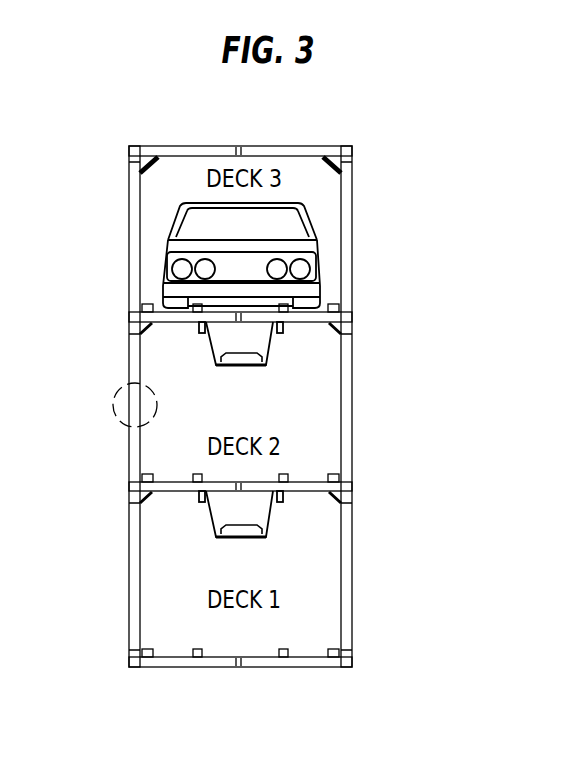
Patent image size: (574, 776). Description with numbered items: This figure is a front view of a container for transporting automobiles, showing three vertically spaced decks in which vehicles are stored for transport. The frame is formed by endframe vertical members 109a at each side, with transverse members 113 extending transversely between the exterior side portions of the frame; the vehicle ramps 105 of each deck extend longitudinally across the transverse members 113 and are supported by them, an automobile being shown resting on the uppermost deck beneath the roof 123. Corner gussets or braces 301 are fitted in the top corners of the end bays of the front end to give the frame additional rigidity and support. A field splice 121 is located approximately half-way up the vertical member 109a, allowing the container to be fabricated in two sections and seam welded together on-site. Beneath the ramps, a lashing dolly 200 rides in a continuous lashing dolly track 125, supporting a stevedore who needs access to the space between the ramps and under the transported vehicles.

The corner gusset 301 is at (147, 154).
The roof 123 is at (221, 147).
The vehicle ramp 105 is at (334, 306).
The transverse member 113 is at (131, 309).
The lashing dolly track 125 is at (198, 325).
The lashing dolly 200 is at (280, 347).
The field splice 121 is at (118, 392).
The endframe vertical member 109a is at (130, 603).